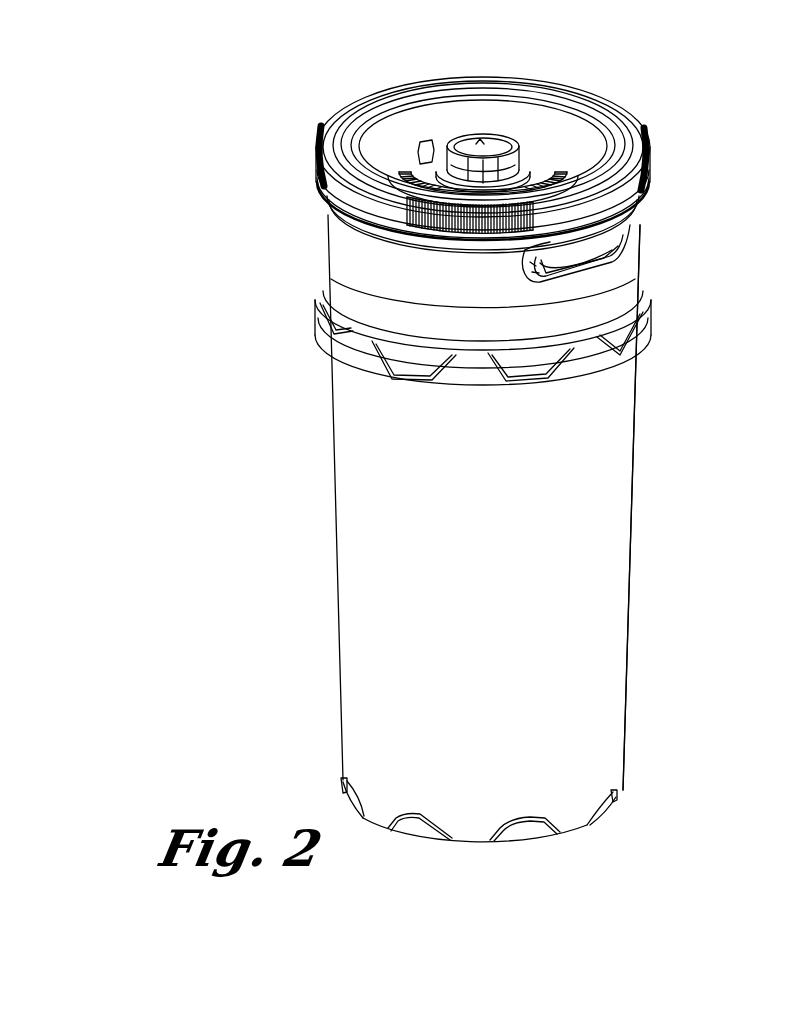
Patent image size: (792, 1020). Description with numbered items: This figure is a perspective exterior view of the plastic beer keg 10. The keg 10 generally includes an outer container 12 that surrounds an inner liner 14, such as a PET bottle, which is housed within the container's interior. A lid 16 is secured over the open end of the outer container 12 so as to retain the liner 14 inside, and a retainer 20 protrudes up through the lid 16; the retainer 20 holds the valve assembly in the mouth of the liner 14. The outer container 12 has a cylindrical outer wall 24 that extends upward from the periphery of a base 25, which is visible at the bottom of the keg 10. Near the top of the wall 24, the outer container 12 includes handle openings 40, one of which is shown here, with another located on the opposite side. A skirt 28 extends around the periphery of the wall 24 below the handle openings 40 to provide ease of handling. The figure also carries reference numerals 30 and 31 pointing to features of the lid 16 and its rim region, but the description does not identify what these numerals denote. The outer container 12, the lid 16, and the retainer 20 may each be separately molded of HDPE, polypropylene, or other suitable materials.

The plastic beer keg 10 is at (266, 276).
The outer container 12 is at (632, 465).
The inner liner 14 is at (609, 255).
The lid 16 is at (466, 151).
The retainer 20 is at (467, 138).
The cylindrical outer wall 24 is at (630, 573).
The base 25 is at (597, 820).
The skirt 28 is at (649, 316).
The rim 30 is at (318, 171).
The top surface 31 is at (332, 130).
The handle openings 40 is at (610, 263).